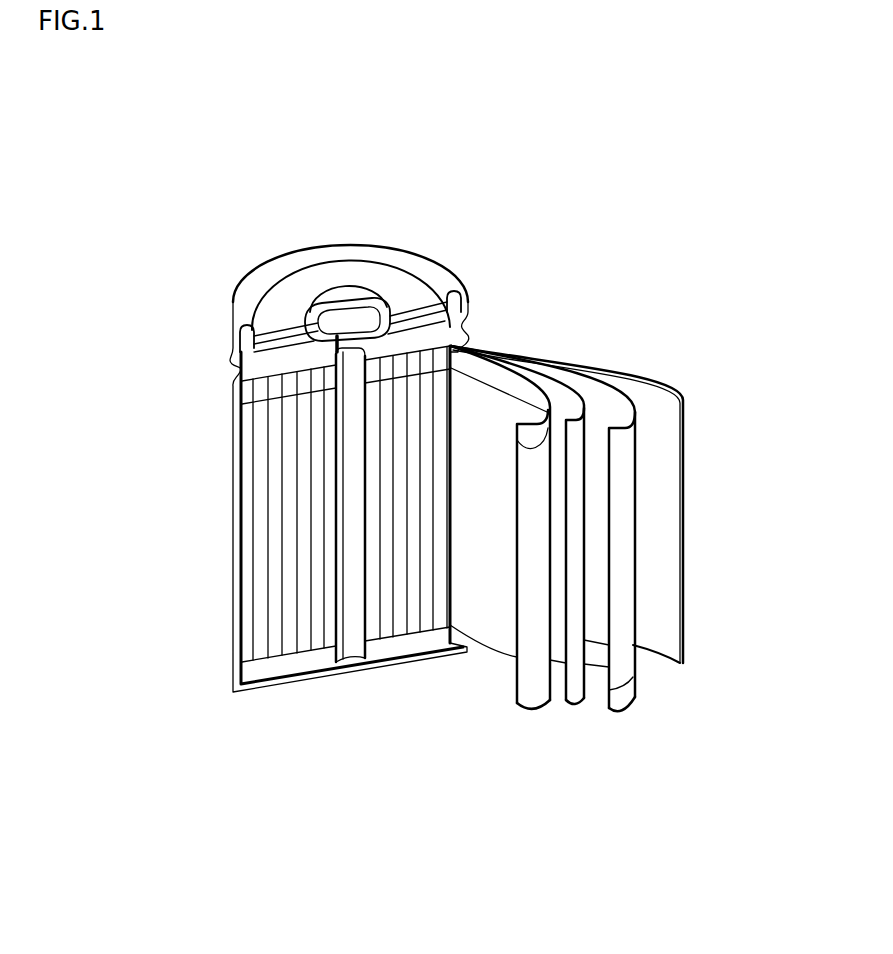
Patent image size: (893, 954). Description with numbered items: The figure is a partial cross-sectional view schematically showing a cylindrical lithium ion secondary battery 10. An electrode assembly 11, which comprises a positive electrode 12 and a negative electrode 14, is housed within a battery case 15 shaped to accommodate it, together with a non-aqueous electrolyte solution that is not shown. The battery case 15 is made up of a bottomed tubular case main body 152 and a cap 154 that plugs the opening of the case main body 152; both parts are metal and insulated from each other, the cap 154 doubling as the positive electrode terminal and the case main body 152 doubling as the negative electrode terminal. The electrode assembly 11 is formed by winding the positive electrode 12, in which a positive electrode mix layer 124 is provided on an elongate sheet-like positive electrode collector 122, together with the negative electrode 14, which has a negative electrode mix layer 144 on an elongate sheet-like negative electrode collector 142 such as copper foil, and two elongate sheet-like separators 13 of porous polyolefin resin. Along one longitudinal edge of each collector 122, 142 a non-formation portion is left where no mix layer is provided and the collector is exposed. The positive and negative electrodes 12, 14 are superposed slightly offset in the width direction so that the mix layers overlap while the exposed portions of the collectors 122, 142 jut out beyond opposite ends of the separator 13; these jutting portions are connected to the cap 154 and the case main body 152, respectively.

The lithium ion secondary battery 10 is at (540, 223).
The electrode assembly 11 is at (251, 603).
The positive electrode 12 is at (512, 714).
The separator 13 is at (670, 358).
The negative electrode 14 is at (606, 718).
The battery case 15 is at (232, 483).
The positive electrode collector 122 is at (482, 372).
The positive electrode mix layer 124 is at (490, 407).
The negative electrode collector 142 is at (621, 695).
The negative electrode mix layer 144 is at (622, 672).
The case main body 152 is at (342, 672).
The cap 154 is at (353, 293).